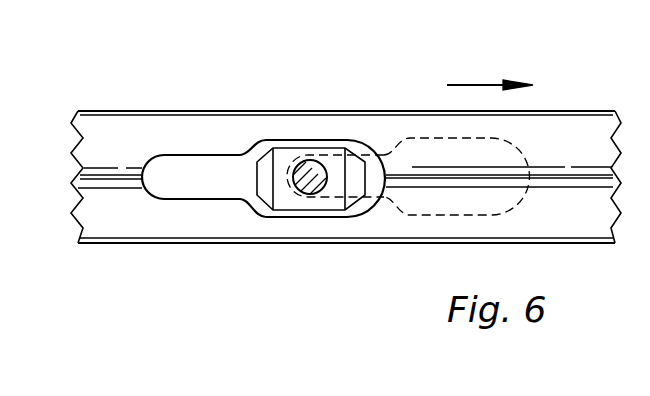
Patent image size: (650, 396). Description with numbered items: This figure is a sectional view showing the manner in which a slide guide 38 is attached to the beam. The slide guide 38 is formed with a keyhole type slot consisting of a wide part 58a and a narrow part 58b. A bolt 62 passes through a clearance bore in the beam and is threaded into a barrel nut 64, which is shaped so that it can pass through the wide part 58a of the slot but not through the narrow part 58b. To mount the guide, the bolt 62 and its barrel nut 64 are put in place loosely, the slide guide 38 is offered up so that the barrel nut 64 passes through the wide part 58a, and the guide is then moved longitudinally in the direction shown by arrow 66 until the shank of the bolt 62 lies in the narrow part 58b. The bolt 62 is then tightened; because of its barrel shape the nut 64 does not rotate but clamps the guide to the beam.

The slide guide 38 is at (101, 122).
The narrow part 58b is at (165, 156).
The wide part 58a is at (268, 143).
The bolt 62 is at (311, 160).
The barrel nut 64 is at (283, 203).
The arrow 66 is at (476, 84).